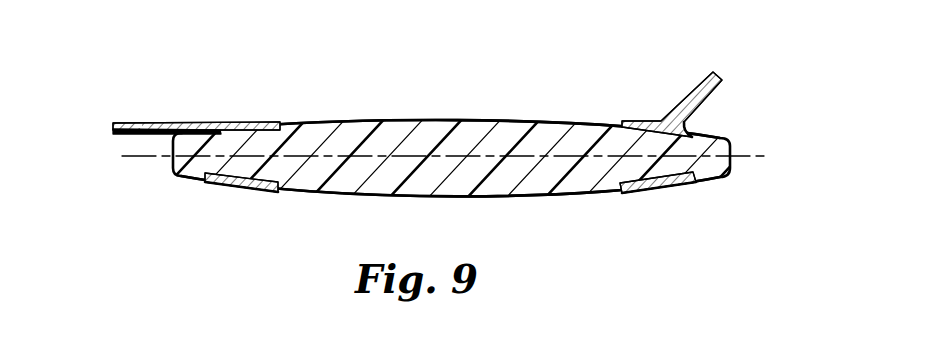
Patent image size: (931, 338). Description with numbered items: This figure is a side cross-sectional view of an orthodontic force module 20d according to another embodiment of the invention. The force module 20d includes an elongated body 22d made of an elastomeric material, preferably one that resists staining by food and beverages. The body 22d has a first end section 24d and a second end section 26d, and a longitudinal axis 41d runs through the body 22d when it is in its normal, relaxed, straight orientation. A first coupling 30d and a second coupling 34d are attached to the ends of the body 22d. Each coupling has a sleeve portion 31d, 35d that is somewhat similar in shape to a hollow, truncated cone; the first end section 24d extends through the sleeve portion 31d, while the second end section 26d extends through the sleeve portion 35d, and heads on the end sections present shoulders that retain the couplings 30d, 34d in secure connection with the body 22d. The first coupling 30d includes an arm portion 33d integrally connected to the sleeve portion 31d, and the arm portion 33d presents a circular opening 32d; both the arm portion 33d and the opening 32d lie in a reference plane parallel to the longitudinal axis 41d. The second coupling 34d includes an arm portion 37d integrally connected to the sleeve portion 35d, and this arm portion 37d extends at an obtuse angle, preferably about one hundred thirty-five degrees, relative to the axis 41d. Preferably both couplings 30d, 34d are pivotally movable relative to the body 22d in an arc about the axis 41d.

The orthodontic force module 20d is at (622, 45).
The elongated body 22d is at (442, 116).
The first end section 24d is at (283, 135).
The second end section 26d is at (614, 180).
The first coupling 30d is at (258, 117).
The sleeve portion 31d is at (243, 192).
The opening 32d is at (140, 122).
The arm portion 33d is at (197, 123).
The second coupling 34d is at (681, 200).
The sleeve portion 35d is at (643, 194).
The arm portion 37d is at (720, 76).
The longitudinal axis 41d is at (132, 161).